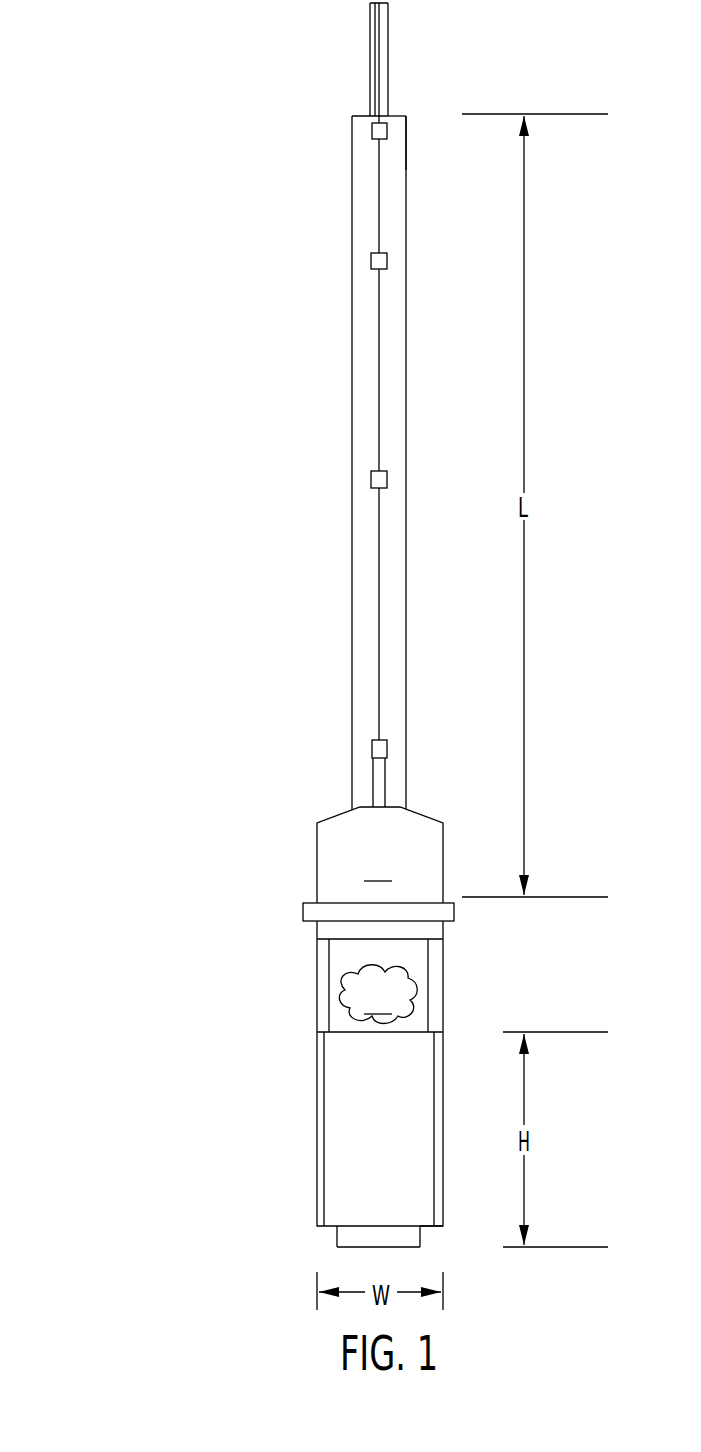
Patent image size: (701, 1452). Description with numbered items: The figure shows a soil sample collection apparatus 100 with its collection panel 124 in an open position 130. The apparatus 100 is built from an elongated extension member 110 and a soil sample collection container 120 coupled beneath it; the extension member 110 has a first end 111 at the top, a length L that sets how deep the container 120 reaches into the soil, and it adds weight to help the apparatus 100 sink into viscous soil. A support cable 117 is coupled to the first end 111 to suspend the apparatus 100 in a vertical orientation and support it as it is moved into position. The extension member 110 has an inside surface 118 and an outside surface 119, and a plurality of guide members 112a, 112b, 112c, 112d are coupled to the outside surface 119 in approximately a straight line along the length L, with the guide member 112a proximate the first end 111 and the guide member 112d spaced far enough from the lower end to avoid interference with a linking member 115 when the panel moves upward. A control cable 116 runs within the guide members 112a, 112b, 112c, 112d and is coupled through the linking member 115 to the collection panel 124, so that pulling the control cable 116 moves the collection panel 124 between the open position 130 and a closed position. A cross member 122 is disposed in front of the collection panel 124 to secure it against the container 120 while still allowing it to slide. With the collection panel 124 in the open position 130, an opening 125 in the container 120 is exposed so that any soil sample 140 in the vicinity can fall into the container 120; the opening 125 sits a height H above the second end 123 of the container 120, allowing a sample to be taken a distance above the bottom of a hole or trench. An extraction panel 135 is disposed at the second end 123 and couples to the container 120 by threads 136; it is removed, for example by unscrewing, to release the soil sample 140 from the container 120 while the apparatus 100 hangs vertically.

The soil sample collection apparatus 100 is at (118, 123).
The extension member 110 is at (352, 343).
The first end 111 is at (357, 116).
The guide member 112a is at (370, 132).
The guide member 112b is at (371, 261).
The guide member 112c is at (371, 479).
The guide member 112d is at (371, 749).
The linking member 115 is at (374, 775).
The control cable 116 is at (378, 620).
The support cable 117 is at (375, 30).
The inside surface 118 is at (392, 113).
The outside surface 119 is at (397, 137).
The soil sample collection container 120 is at (342, 1150).
The cross member 122 is at (316, 912).
The second end 123 is at (345, 1247).
The collection panel 124 is at (340, 845).
The opening 125 is at (342, 975).
The open position 130 is at (378, 866).
The extraction panel 135 is at (348, 1240).
The threads 136 is at (425, 1229).
The soil sample 140 is at (378, 994).